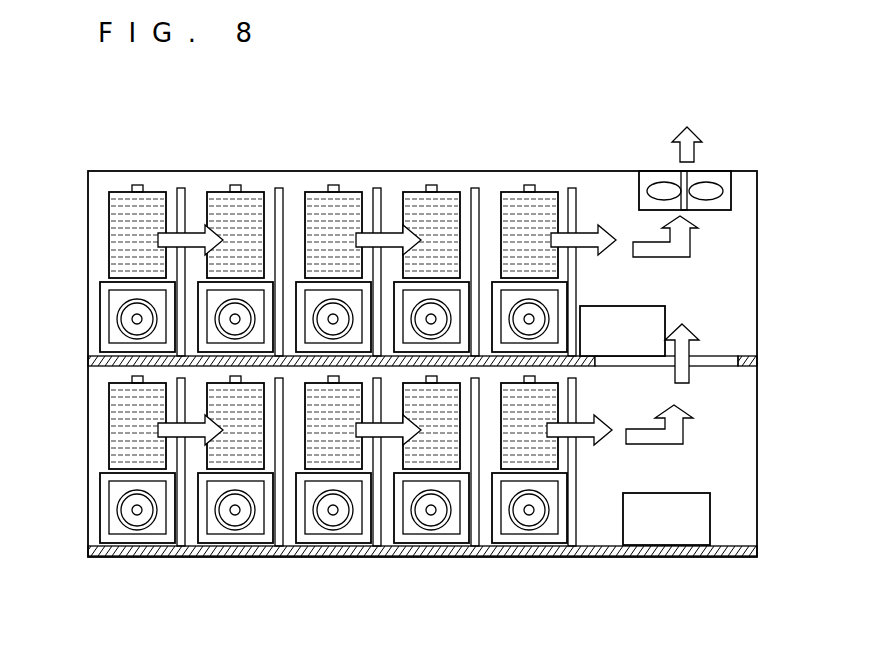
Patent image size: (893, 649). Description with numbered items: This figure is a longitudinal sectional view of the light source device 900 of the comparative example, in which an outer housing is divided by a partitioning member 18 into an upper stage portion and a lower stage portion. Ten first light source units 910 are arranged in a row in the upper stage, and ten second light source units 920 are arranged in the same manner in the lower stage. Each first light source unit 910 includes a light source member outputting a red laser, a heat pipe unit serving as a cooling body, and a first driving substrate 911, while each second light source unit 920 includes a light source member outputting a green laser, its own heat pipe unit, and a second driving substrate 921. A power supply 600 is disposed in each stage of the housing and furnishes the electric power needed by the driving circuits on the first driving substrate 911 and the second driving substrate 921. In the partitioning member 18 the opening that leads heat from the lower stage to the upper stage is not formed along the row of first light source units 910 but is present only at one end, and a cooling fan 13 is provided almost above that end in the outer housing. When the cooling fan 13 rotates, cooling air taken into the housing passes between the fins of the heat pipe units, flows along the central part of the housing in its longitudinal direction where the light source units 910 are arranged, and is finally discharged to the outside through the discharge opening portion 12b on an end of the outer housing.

The light source device 900 is at (396, 146).
The first light source unit 910 is at (98, 222).
The first driving substrate 911 is at (181, 188).
The second light source unit 920 is at (98, 434).
The second driving substrate 921 is at (182, 540).
The partitioning member 18 is at (88, 362).
The cooling fan 13 is at (660, 183).
The discharge opening portion 12b is at (717, 170).
The power supply 600 is at (623, 304).